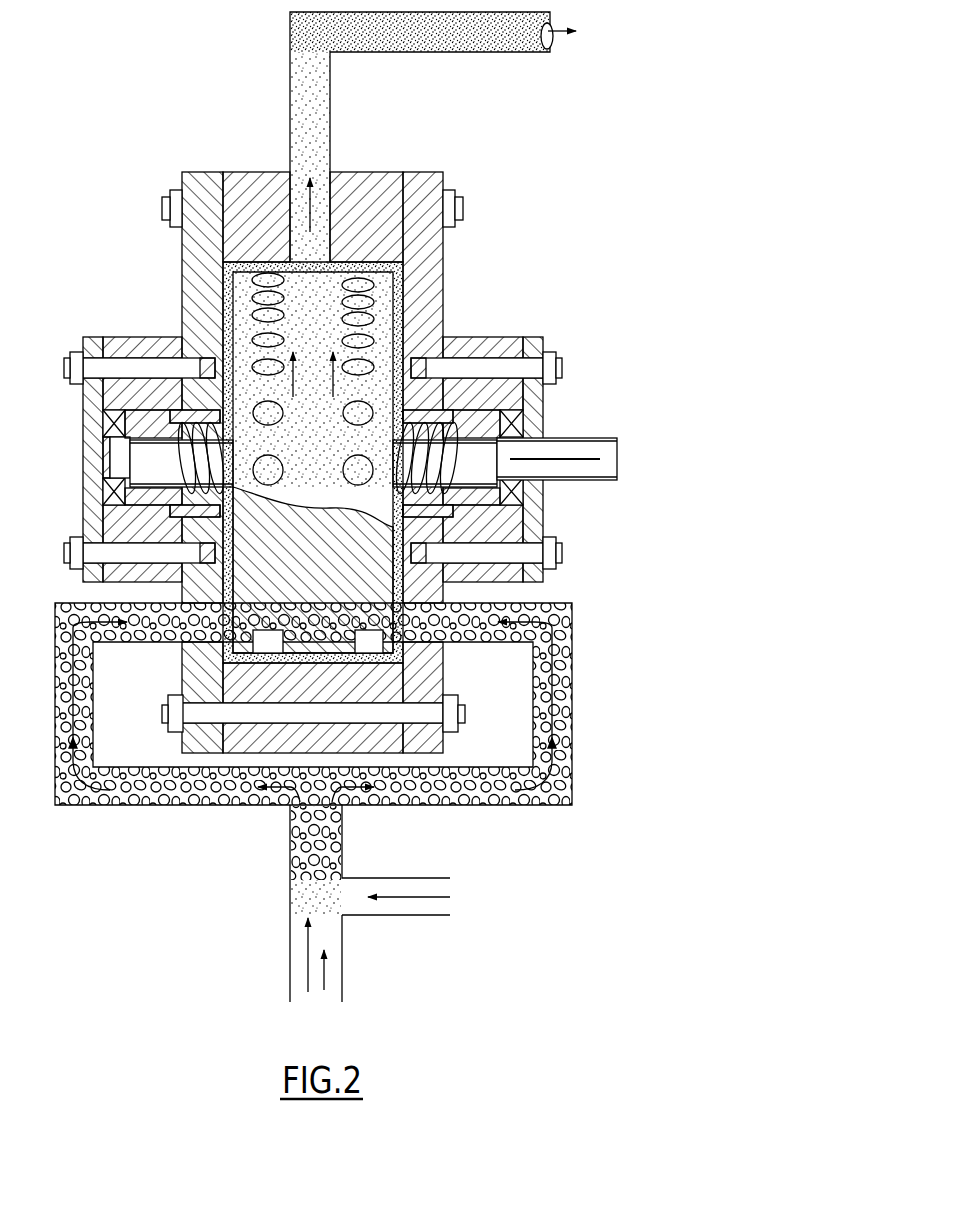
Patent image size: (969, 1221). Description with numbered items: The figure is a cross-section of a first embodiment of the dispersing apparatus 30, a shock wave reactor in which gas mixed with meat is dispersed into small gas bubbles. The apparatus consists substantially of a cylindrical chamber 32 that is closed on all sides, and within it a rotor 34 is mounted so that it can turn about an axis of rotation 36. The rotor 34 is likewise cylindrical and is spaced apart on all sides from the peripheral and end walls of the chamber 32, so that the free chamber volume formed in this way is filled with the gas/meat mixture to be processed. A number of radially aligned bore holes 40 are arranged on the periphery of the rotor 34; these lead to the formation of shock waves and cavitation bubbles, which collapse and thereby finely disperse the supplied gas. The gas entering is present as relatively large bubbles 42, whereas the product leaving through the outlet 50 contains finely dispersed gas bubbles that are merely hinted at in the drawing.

The dispersing apparatus 30 is at (372, 507).
The cylindrical chamber 32 is at (397, 285).
The rotor 34 is at (373, 405).
The axis of rotation 36 is at (566, 447).
The bore holes 40 is at (373, 330).
The bubbles 42 is at (203, 792).
The outlet 50 is at (333, 108).